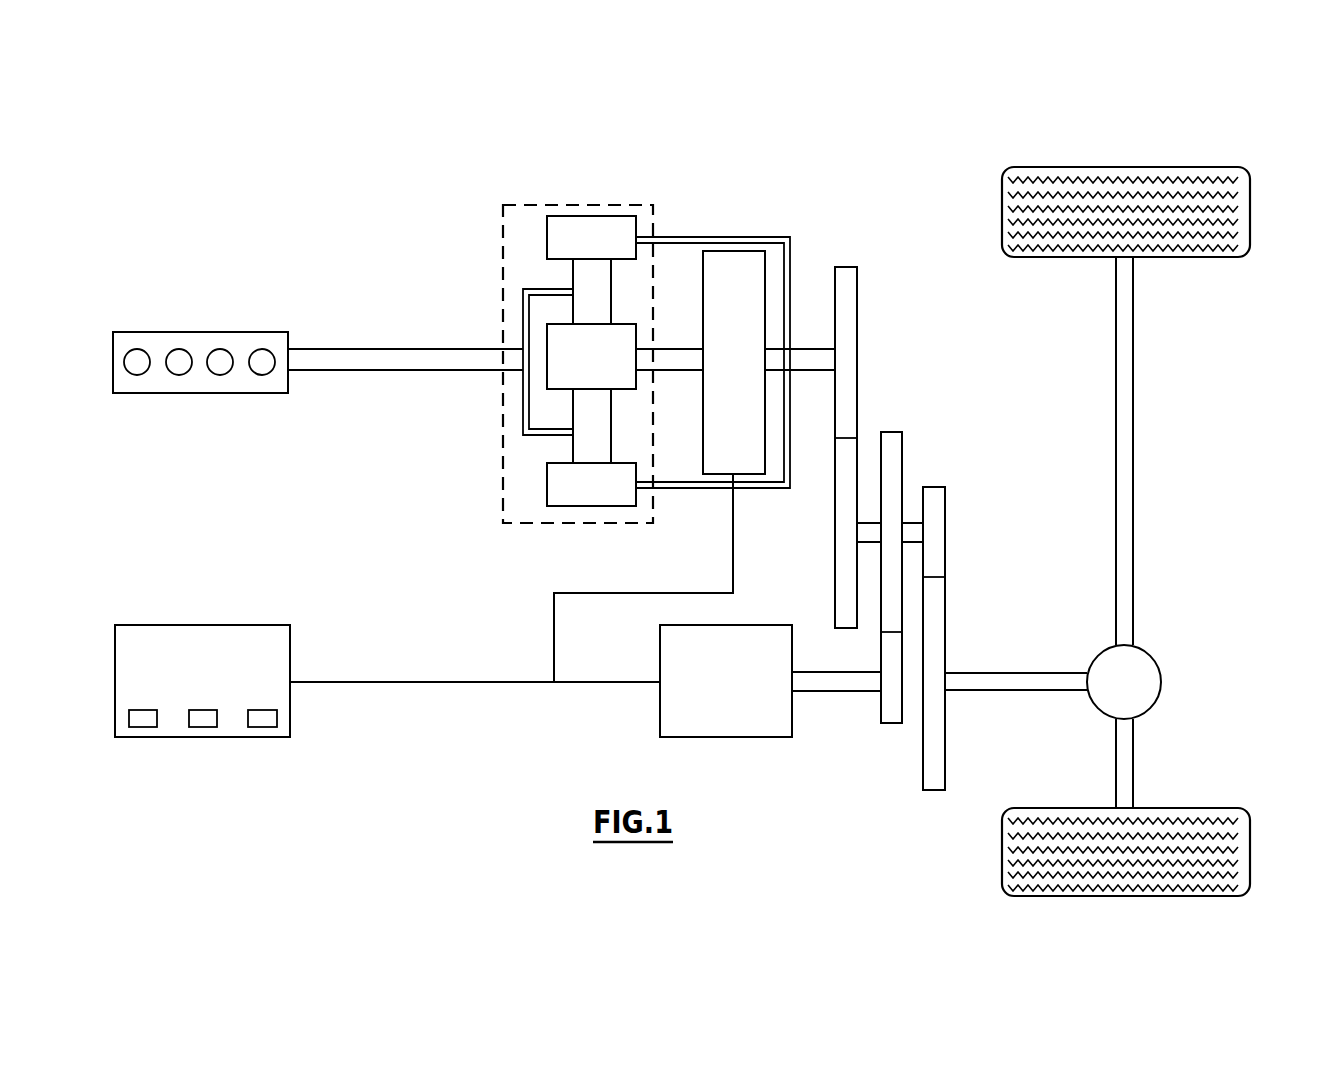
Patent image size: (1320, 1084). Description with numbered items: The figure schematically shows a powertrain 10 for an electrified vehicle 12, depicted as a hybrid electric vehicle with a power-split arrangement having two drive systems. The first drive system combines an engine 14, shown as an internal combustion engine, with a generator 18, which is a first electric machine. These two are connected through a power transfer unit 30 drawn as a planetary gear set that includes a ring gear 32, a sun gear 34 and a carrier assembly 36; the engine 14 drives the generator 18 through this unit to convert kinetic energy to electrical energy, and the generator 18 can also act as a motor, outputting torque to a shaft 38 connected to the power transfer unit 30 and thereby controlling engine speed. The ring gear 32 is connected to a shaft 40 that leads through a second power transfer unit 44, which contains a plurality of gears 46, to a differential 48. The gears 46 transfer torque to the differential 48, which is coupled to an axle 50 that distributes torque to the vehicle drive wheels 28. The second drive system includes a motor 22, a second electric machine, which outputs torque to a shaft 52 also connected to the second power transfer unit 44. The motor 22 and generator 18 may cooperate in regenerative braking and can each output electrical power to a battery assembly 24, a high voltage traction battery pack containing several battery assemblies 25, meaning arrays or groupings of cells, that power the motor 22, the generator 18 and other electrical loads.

The powertrain 10 is at (342, 222).
The electrified vehicle 12 is at (763, 152).
The engine 14 is at (132, 332).
The generator 18 is at (712, 251).
The motor 22 is at (795, 720).
The battery assembly 24 is at (132, 625).
The battery assemblies 25 is at (157, 718).
The vehicle drive wheels 28 is at (1250, 850).
The power transfer unit 30 is at (503, 483).
The ring gear 32 is at (547, 238).
The sun gear 34 is at (547, 330).
The carrier assembly 36 is at (523, 420).
The shaft 38 is at (670, 348).
The shaft 40 is at (812, 349).
The second power transfer unit 44 is at (934, 388).
The gears 46 is at (857, 400).
The differential 48 is at (1158, 703).
The axle 50 is at (1133, 440).
The shaft 52 is at (845, 692).